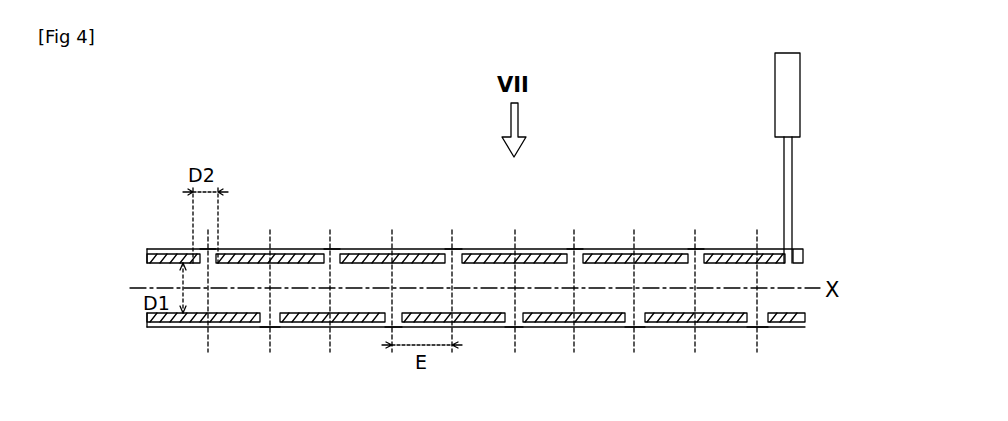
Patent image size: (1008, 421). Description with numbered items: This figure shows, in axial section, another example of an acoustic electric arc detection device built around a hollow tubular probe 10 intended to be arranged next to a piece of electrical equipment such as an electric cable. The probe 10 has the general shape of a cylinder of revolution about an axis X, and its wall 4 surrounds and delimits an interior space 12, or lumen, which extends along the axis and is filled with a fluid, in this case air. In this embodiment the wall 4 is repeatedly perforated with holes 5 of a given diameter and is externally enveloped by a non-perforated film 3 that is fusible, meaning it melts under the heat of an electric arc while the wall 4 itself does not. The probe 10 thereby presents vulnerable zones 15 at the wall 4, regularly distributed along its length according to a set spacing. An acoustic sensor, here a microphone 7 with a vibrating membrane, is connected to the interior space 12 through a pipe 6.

The film 3 is at (147, 251).
The wall 4 is at (803, 263).
The holes 5 is at (327, 263).
The pipe 6 is at (793, 190).
The microphone 7 is at (782, 107).
The tubular probe 10 is at (414, 241).
The interior space 12 is at (607, 278).
The vulnerable zones 15 is at (566, 247).